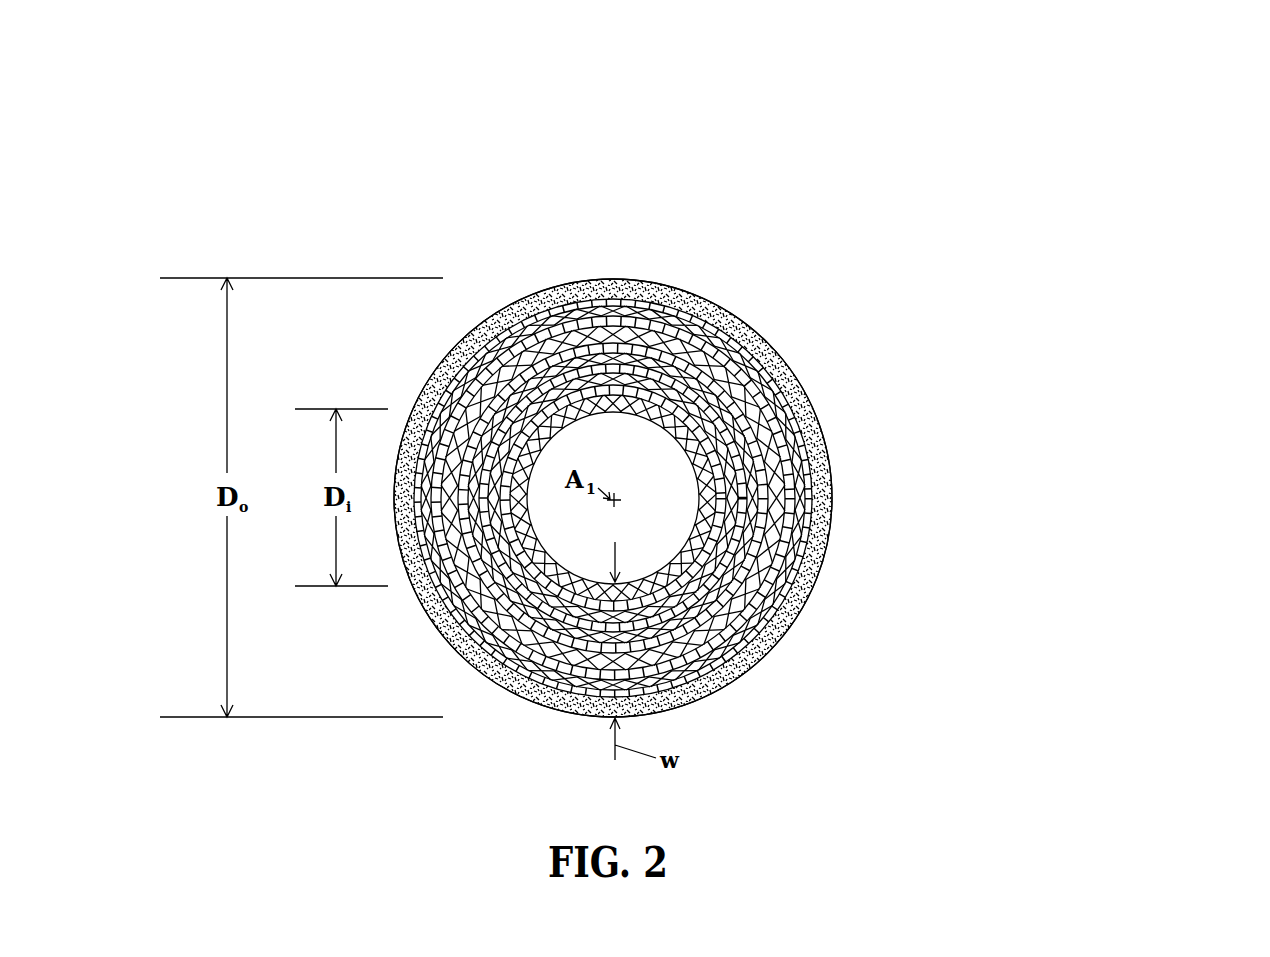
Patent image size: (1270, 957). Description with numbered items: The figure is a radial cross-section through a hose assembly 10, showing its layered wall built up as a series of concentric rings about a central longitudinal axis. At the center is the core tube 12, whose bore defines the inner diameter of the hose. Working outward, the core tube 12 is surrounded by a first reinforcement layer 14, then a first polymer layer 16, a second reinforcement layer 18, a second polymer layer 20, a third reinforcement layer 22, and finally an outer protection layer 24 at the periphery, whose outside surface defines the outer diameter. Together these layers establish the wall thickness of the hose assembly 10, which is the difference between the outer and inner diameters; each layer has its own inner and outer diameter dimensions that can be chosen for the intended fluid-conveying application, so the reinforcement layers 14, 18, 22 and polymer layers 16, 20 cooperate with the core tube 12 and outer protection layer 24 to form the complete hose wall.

The hose assembly 10 is at (1185, 89).
The core tube 12 is at (701, 451).
The first reinforcement layer 14 is at (717, 442).
The first polymer layer 16 is at (732, 424).
The second reinforcement layer 18 is at (743, 397).
The second polymer layer 20 is at (755, 362).
The third reinforcement layer 22 is at (749, 347).
The outer protection layer 24 is at (733, 313).